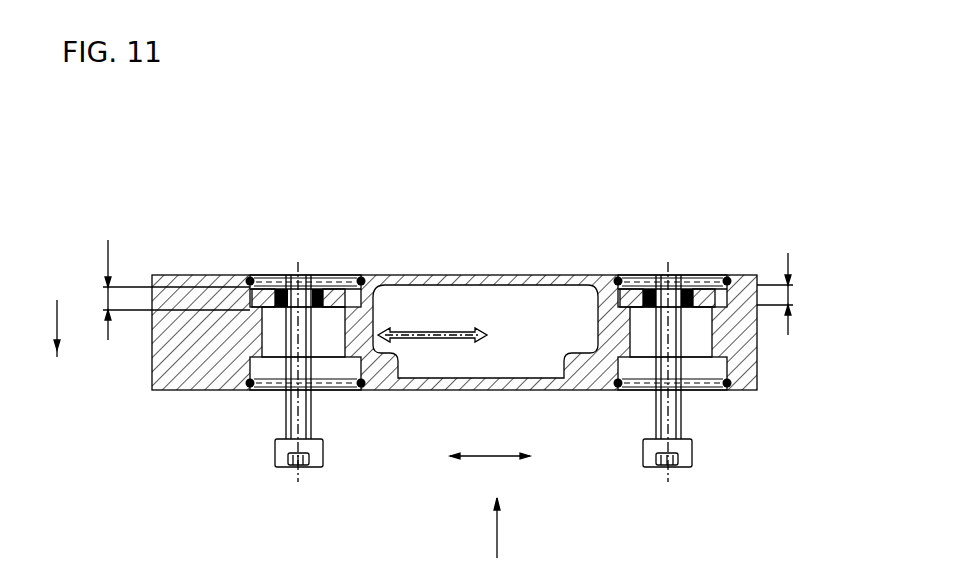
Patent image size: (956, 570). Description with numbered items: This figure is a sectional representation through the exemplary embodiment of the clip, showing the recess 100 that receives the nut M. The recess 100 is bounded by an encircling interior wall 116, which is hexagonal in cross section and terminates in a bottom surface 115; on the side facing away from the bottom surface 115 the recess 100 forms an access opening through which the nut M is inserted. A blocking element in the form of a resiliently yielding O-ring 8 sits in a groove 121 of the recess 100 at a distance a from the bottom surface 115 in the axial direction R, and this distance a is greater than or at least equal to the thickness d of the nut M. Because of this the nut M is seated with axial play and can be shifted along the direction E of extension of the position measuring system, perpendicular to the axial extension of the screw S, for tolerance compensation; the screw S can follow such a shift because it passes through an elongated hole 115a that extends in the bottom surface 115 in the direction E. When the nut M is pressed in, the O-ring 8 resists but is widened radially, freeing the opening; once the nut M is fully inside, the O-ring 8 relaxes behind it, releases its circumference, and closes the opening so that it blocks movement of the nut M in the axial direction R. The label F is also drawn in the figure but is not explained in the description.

The O-ring 8 is at (247, 278).
The recess 100 is at (278, 276).
The bottom surface 115 is at (343, 276).
The elongated hole 115a is at (244, 388).
The interior wall 116 is at (258, 277).
The groove 121 is at (393, 276).
The nut M is at (322, 276).
The screw S is at (290, 410).
The force direction F is at (707, 343).
The direction of extension E is at (490, 443).
The axial direction R is at (265, 422).
The thickness of the nut d is at (166, 290).
The distance a is at (786, 294).